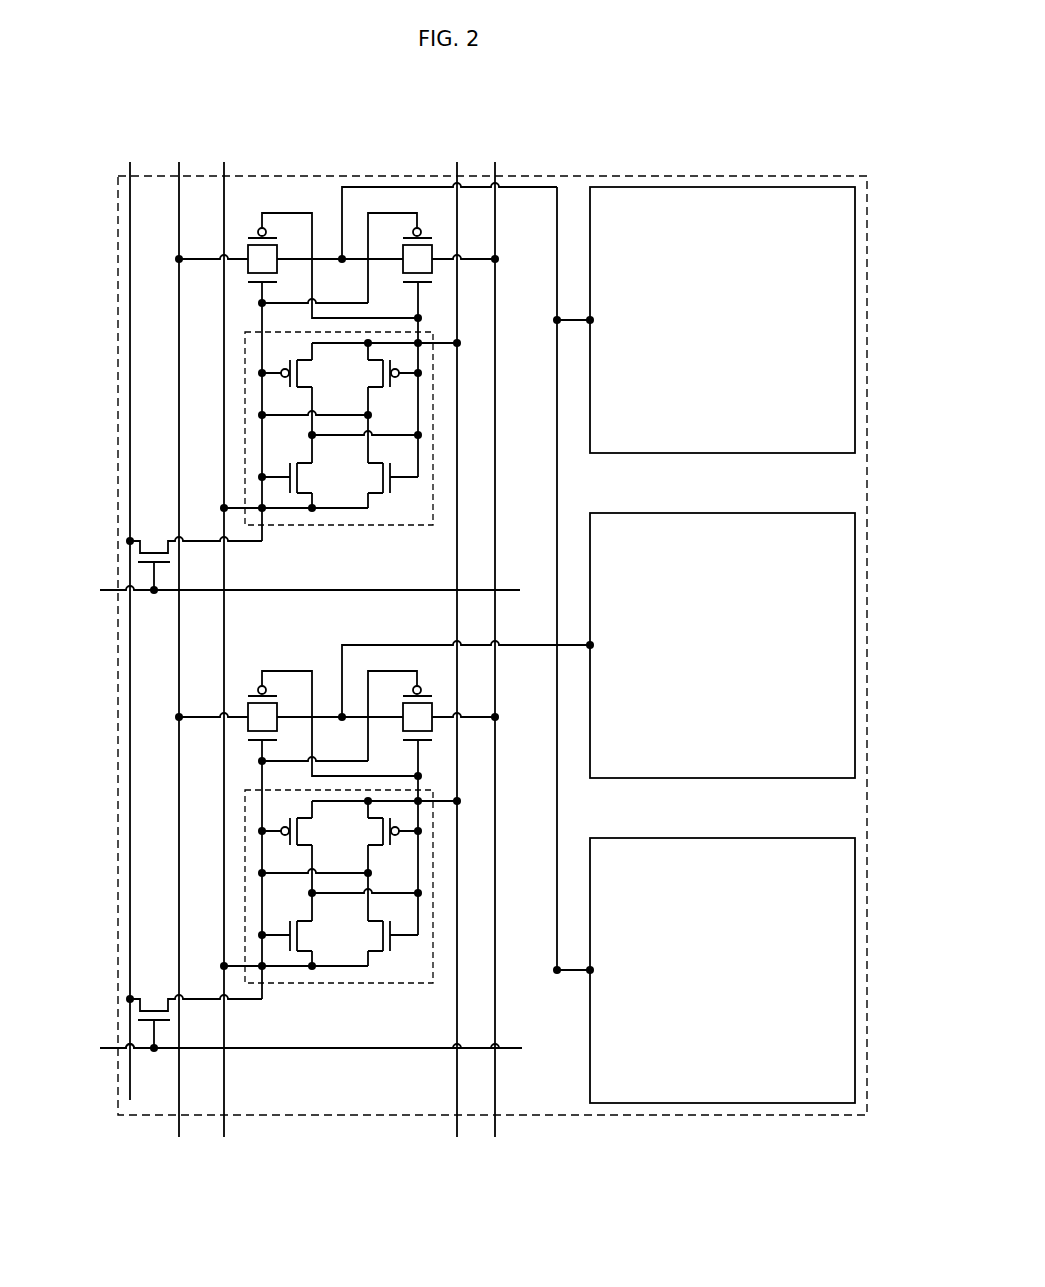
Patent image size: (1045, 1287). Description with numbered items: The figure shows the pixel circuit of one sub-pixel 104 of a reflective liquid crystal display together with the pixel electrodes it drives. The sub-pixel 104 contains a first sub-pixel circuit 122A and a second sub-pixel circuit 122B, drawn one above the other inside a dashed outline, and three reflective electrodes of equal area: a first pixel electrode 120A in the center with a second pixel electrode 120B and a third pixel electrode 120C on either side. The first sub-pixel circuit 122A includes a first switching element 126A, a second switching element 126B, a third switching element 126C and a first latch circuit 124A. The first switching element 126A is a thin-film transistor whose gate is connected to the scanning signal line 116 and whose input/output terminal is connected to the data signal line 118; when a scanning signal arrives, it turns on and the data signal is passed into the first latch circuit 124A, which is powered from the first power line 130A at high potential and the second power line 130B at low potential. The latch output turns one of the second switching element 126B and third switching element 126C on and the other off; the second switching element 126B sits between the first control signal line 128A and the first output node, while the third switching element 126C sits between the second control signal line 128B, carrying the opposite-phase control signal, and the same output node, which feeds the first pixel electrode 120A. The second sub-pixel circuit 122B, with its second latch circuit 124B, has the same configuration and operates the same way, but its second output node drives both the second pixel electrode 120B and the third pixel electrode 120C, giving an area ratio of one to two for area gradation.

The sub-pixel 104 is at (418, 176).
The scanning signal line 116 is at (292, 1090).
The data signal line 118 is at (128, 741).
The first pixel electrode 120A is at (855, 645).
The second pixel electrode 120B is at (855, 320).
The third pixel electrode 120C is at (855, 970).
The first sub-pixel circuit 122A is at (152, 854).
The second sub-pixel circuit 122B is at (152, 397).
The first latch circuit 124A is at (339, 918).
The second latch circuit 124B is at (338, 526).
The first switching element 126A is at (147, 1021).
The second switching element 126B is at (259, 678).
The third switching element 126C is at (412, 678).
The first control signal line 128A is at (179, 1137).
The second control signal line 128B is at (495, 1137).
The first power line 130A is at (224, 1137).
The second power line 130B is at (457, 1137).